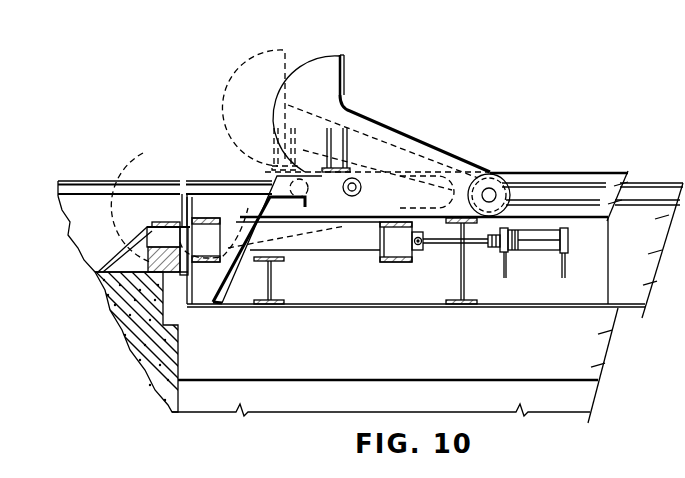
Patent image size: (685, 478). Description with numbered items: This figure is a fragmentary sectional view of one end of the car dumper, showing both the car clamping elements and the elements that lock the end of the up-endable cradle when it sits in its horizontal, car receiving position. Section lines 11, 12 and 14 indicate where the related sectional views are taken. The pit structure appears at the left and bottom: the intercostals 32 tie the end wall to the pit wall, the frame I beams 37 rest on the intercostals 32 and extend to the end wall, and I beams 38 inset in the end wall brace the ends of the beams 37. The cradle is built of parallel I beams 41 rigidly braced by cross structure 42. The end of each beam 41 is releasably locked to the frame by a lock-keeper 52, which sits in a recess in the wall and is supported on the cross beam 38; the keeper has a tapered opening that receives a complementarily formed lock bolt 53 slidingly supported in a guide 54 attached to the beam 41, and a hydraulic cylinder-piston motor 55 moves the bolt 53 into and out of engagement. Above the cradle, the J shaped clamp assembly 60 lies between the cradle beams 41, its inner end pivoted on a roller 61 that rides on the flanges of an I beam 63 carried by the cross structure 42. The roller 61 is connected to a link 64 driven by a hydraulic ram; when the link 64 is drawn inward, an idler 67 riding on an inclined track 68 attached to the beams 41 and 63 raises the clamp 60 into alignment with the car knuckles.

The section line 11- 11 is at (204, 350).
The section line 12- 12 is at (489, 230).
The section line 14- 14 is at (353, 222).
The intercostals 32 is at (445, 396).
The I beams 37 is at (588, 356).
The I beams 38 is at (165, 305).
The I beams 41 is at (348, 298).
The cross structure 42 is at (271, 282).
The lock-keeper 52 is at (157, 226).
The lock bolt 53 is at (323, 248).
The guide 54 is at (404, 262).
The hydraulic cylinder-piston motor 55 is at (548, 245).
The J shaped assembly 60 is at (397, 128).
The roller 61 is at (500, 185).
The I beam 63 is at (606, 218).
The link 64 is at (565, 195).
The idler 67 is at (312, 192).
The inclined track 68 is at (228, 282).